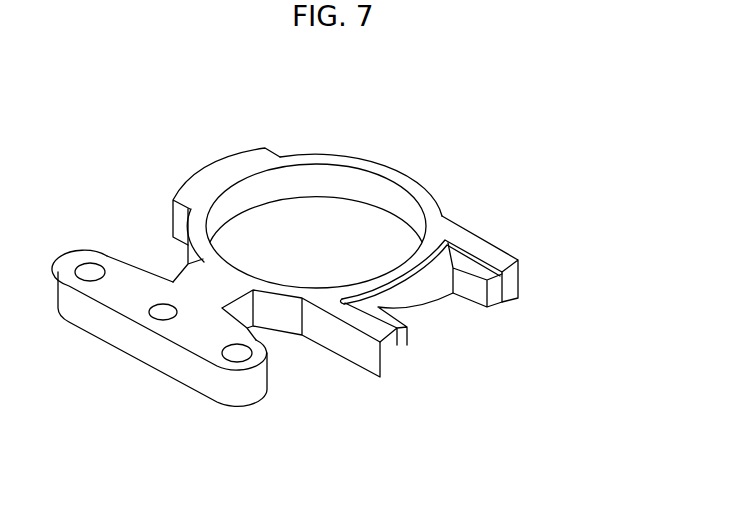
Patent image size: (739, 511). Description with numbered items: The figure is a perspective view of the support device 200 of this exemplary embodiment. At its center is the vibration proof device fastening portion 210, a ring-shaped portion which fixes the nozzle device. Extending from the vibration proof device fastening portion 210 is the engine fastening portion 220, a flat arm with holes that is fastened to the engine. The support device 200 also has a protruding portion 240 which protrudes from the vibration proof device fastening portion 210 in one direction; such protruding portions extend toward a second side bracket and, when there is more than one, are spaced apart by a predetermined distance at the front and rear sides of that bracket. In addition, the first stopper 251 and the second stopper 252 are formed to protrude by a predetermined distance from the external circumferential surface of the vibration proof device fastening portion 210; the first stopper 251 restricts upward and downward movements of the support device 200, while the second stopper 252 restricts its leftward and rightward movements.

The support device 200 is at (285, 75).
The vibration proof device fastening portion 210 is at (385, 170).
The engine fastening portion 220 is at (133, 280).
The protruding portion 240 is at (485, 247).
The first stopper 251 is at (213, 175).
The second stopper 252 is at (430, 302).